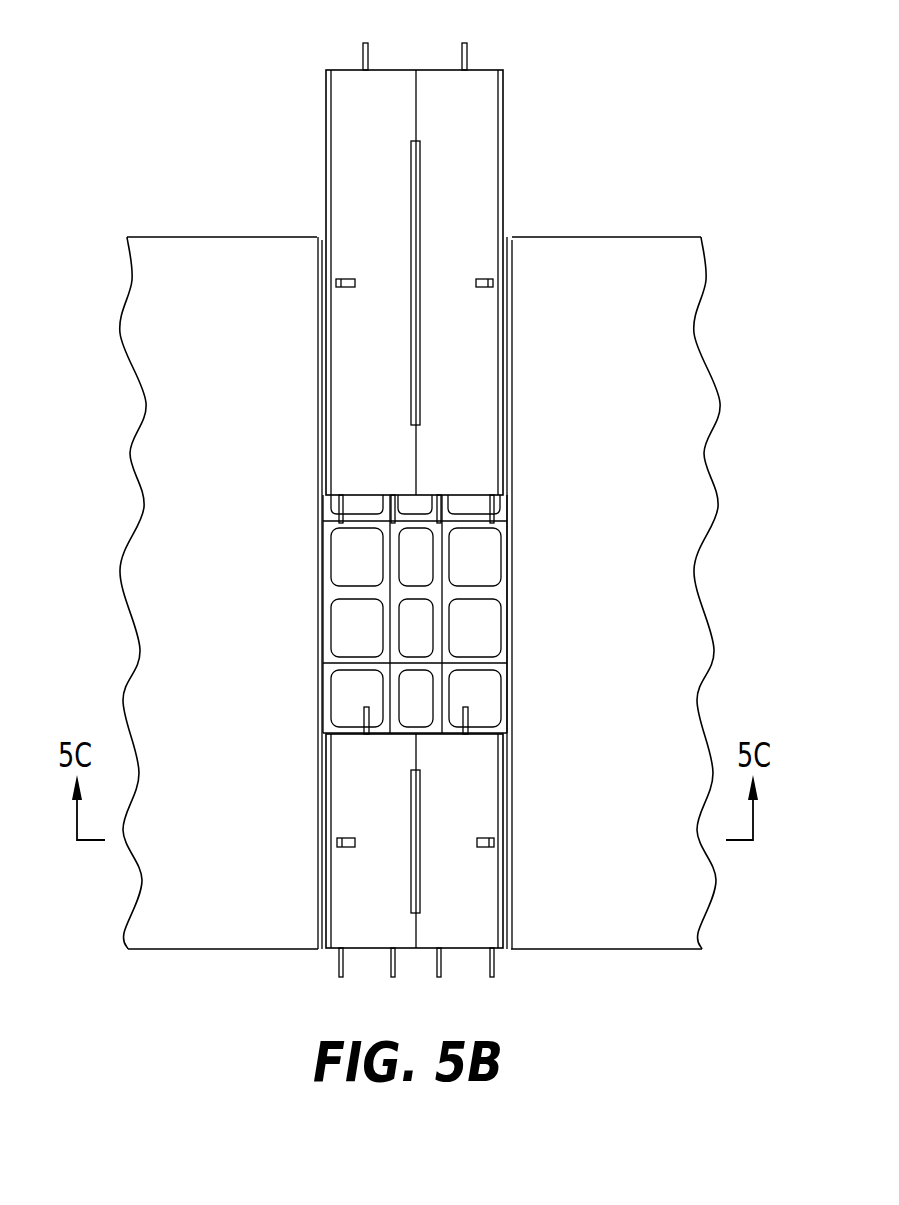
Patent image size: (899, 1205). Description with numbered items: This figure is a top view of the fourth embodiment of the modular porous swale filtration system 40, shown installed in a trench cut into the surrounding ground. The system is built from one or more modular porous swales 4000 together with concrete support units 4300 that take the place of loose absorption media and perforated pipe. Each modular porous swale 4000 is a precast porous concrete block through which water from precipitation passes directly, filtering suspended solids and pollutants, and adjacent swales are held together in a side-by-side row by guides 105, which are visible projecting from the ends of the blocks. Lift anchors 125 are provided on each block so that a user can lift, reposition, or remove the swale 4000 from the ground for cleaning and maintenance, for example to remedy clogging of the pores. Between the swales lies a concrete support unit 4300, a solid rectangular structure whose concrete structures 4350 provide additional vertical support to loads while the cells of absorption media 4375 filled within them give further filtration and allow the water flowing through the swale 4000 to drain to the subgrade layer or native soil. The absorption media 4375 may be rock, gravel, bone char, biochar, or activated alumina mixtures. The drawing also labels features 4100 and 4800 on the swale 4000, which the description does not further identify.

The modular porous swale filtration system 40 is at (88, 78).
The guides 105 is at (468, 53).
The lift anchors 125 is at (486, 302).
The modular porous swale 4000 is at (316, 149).
The module chamber 4100 is at (466, 180).
The concrete support unit 4300 is at (499, 592).
The concrete structures 4350 is at (504, 727).
The absorption media 4375 is at (476, 627).
The blade 4800 is at (430, 387).